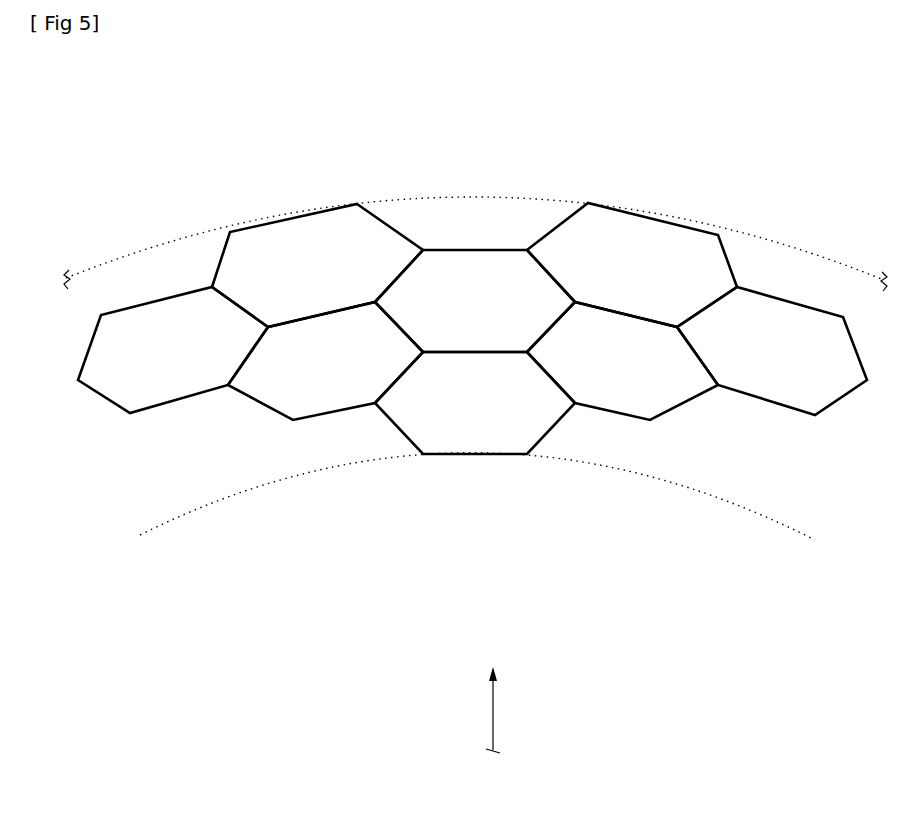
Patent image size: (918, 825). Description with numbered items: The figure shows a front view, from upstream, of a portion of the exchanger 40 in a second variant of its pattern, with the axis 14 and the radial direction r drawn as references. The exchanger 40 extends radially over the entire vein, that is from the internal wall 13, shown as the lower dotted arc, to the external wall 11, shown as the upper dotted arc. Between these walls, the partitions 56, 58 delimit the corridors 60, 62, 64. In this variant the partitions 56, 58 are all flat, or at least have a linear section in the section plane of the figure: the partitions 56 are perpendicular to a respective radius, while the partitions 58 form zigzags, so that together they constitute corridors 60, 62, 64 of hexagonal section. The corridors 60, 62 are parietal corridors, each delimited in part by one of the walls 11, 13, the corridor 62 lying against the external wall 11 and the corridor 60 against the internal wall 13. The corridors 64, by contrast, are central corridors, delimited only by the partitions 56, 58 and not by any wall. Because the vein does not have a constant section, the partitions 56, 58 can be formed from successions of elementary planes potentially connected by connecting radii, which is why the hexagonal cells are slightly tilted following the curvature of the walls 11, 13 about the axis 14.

The external wall 11 is at (192, 240).
The internal wall 13 is at (368, 460).
The axis 14 is at (495, 752).
The exchanger 40 is at (472, 300).
The partitions 56 is at (320, 313).
The partitions 58 is at (95, 338).
The parietal corridor 60 is at (477, 428).
The parietal corridor 62 is at (613, 219).
The central corridor 64 is at (490, 317).